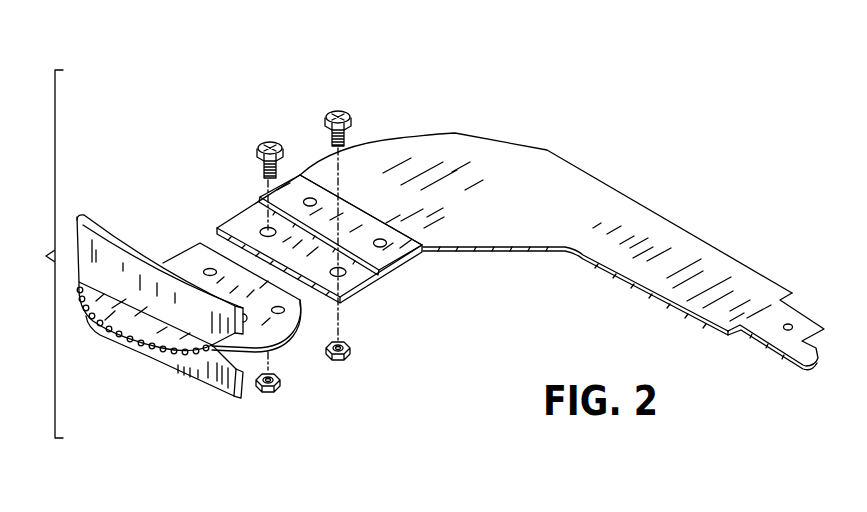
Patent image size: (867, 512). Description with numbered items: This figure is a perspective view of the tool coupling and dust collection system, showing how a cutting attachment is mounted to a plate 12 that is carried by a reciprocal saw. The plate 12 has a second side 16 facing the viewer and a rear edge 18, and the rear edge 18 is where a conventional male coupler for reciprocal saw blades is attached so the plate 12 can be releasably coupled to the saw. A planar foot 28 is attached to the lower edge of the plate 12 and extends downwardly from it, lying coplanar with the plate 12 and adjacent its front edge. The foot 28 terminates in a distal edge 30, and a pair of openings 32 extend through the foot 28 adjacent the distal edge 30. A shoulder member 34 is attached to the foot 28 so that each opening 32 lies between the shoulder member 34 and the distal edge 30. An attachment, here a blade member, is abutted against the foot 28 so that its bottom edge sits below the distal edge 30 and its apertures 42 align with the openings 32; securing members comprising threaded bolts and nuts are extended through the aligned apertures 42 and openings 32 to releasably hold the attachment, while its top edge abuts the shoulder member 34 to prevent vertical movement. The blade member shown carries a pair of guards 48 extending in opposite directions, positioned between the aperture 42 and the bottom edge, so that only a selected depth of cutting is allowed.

The plate 12 is at (548, 150).
The second side 16 is at (552, 182).
The rear edge 18 is at (730, 334).
The planar foot 28 is at (363, 275).
The distal edge 30 is at (217, 227).
The opening 32 is at (265, 230).
The shoulder member 34 is at (357, 218).
The aperture 42 is at (292, 320).
The guards 48 is at (107, 233).